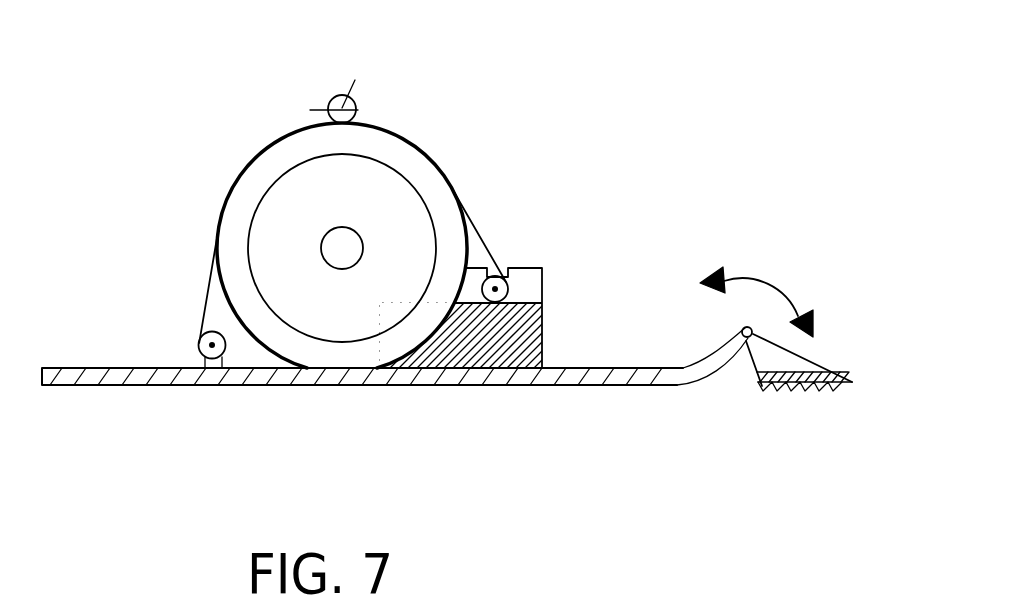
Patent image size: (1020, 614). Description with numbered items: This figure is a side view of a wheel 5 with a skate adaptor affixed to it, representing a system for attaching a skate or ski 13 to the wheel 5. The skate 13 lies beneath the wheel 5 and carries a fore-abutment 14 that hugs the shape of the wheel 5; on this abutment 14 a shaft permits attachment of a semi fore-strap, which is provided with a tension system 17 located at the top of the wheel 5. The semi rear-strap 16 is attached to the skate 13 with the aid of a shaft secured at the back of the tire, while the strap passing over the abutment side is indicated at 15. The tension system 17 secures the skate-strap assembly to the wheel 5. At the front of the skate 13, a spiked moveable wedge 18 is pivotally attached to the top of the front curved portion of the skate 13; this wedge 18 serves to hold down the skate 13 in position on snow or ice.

The wheel 5 is at (272, 172).
The skate 13 is at (465, 377).
The fore-abutment 14 is at (523, 324).
The guide roller 15 is at (483, 232).
The semi rear-strap 16 is at (217, 268).
The tension system 17 is at (343, 108).
The spiked moveable wedge 18 is at (775, 362).